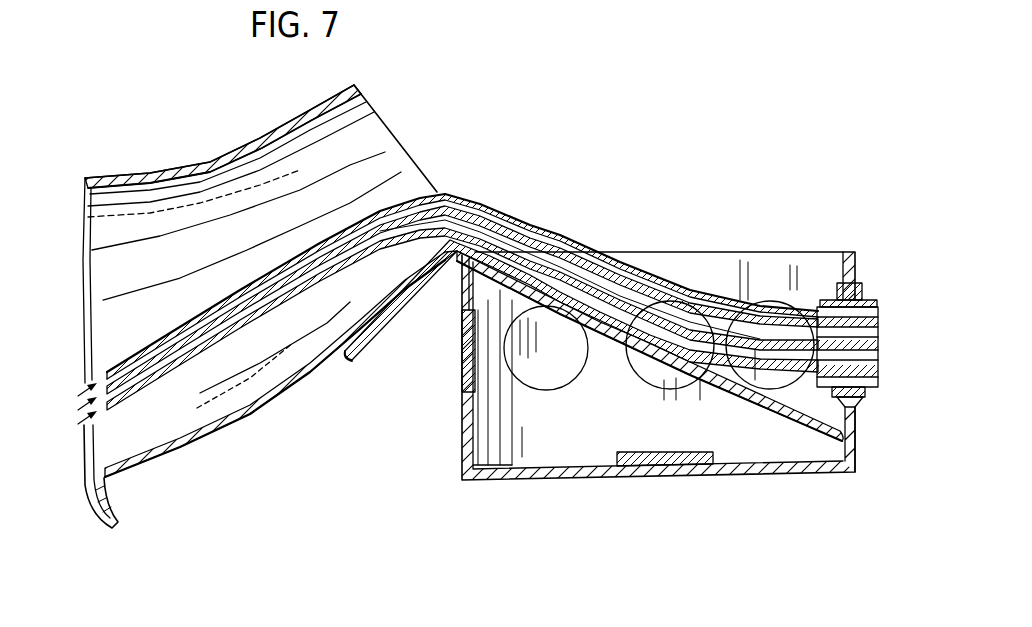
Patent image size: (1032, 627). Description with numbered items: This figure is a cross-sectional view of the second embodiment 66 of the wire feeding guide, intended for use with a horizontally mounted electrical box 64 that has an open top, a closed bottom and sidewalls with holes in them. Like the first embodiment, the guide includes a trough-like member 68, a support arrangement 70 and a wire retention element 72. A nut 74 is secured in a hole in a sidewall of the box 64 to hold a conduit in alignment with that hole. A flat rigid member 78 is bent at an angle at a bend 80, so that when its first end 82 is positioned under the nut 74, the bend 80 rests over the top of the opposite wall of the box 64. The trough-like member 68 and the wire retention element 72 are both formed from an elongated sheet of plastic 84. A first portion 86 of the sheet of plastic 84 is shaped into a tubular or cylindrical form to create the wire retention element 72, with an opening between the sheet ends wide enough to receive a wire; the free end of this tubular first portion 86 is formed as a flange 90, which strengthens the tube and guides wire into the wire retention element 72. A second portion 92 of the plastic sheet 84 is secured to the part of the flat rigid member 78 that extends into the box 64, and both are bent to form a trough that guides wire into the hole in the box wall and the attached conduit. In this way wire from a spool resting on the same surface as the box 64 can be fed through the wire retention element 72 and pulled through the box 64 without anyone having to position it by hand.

The horizontally mounted electrical box 64 is at (537, 481).
The second embodiment of the wire feeding guide 66 is at (281, 364).
The trough-like member 68 is at (622, 335).
The support arrangement 70 is at (432, 288).
The wire retention element 72 is at (386, 110).
The nut 74 is at (843, 293).
The flat rigid member 78 is at (371, 354).
The bend 80 is at (445, 296).
The first end of the rigid member 82 is at (834, 472).
The elongated sheet of plastic 84 is at (423, 172).
The first portion of the sheet of plastic 86 is at (204, 165).
The flange 90 is at (100, 512).
The second portion of the plastic sheet 92 is at (578, 258).